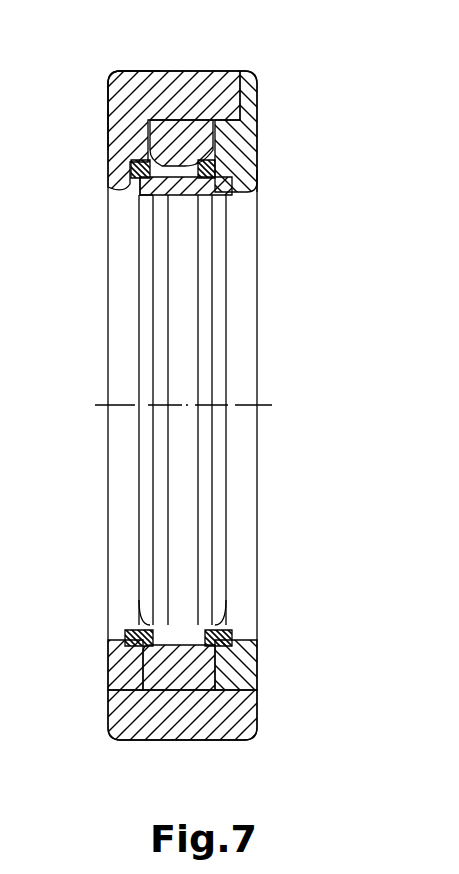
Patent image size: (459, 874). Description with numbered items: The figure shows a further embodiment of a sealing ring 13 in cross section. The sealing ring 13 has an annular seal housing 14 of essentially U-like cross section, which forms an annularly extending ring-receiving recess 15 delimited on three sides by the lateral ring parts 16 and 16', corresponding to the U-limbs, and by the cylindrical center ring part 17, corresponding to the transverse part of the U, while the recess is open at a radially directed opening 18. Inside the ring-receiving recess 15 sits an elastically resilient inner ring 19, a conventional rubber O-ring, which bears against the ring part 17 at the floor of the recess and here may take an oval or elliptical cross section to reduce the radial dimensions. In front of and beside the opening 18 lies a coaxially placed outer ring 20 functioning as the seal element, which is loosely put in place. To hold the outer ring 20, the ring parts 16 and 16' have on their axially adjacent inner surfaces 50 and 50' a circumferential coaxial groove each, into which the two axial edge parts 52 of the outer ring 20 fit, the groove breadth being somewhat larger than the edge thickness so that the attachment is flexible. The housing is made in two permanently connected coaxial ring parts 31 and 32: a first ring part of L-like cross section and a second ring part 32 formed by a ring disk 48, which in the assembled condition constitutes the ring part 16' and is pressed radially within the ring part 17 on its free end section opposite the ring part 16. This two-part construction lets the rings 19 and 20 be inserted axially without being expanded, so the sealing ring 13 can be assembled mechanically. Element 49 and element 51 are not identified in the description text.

The sealing ring 13 is at (270, 91).
The seal housing 14 is at (142, 68).
The ring part 17 is at (178, 82).
The retaining block 49 is at (229, 112).
The inner ring 19 is at (257, 141).
The ring part 16 is at (97, 165).
The ring part 16' is at (267, 164).
The outer ring 20 is at (165, 195).
The ring-receiving recess 15 is at (140, 185).
The ring part 31 is at (106, 128).
The ring part 32 is at (262, 176).
The opening 18 is at (220, 197).
The inner surface 50 is at (95, 602).
The inner surface 50' is at (277, 603).
The edge parts 52 is at (145, 640).
The support ring 51 is at (150, 668).
The ring disk 48 is at (240, 690).